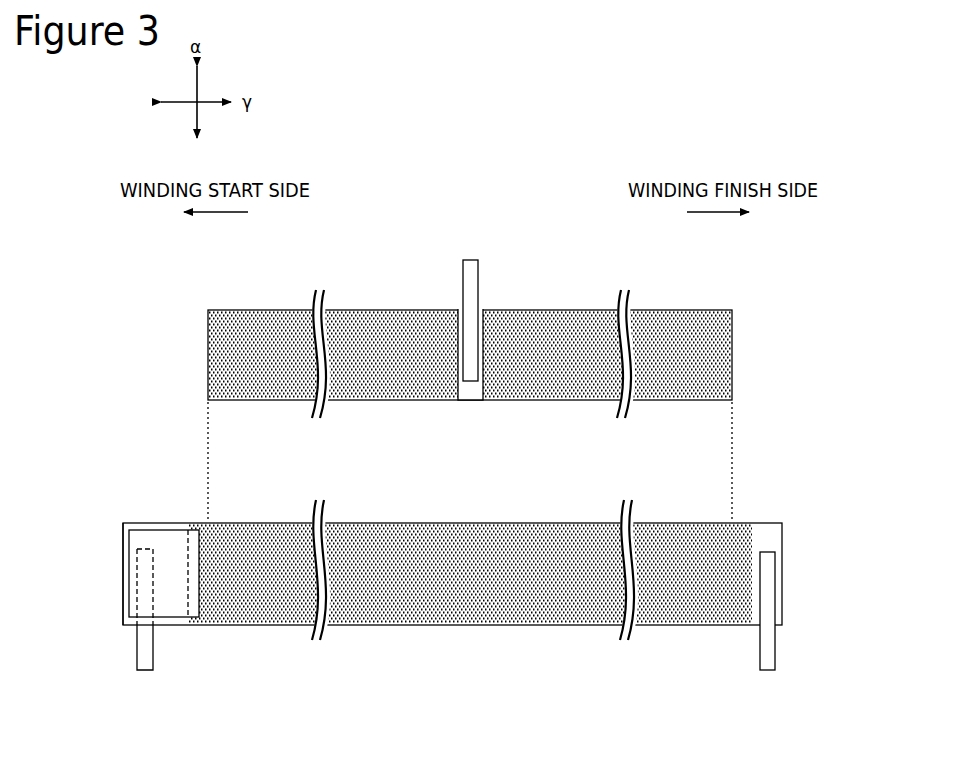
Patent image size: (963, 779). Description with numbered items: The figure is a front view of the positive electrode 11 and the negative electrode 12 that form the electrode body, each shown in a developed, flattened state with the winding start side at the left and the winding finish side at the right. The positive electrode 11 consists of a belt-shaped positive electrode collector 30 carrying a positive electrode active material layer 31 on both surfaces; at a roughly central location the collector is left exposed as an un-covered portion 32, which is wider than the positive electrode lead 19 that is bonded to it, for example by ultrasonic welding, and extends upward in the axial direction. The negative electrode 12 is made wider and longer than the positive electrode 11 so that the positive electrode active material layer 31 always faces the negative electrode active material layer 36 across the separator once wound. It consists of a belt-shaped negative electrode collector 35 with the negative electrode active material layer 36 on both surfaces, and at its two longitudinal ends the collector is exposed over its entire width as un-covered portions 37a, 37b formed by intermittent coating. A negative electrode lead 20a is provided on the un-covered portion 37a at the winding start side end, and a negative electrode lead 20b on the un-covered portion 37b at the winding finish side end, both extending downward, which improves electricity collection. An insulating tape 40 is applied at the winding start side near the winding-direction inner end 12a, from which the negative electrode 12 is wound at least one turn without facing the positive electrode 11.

The positive electrode 11 is at (505, 326).
The negative electrode 12 is at (455, 588).
The winding-direction inner end 12a is at (122, 560).
The positive electrode lead 19 is at (470, 258).
The negative electrode lead 20a is at (142, 672).
The negative electrode lead 20b is at (768, 672).
The positive electrode collector 30 is at (471, 392).
The positive electrode active material layer 31 is at (365, 392).
The un-covered portion 32 is at (470, 355).
The negative electrode collector 35 is at (783, 538).
The negative electrode active material layer 36 is at (468, 627).
The un-covered portion 37a is at (180, 522).
The un-covered portion 37b is at (765, 523).
The insulating tape 40 is at (158, 541).